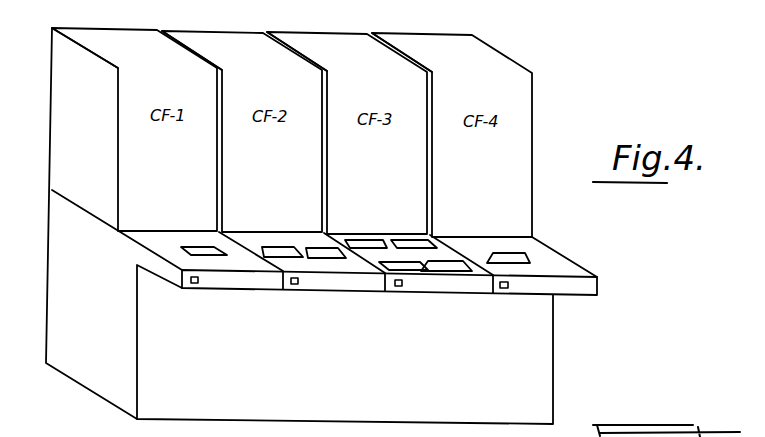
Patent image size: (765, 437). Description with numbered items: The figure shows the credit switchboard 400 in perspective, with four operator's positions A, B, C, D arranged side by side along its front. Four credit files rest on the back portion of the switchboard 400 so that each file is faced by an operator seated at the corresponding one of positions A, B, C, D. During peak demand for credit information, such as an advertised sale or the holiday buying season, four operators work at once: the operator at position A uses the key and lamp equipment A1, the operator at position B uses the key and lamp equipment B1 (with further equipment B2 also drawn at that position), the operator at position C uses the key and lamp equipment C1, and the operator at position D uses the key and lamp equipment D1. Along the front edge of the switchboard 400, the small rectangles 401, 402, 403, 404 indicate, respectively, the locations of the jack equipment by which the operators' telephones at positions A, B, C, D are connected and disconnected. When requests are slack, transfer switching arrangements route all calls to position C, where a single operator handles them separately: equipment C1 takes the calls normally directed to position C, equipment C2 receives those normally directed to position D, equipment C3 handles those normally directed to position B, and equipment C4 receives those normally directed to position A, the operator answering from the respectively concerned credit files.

The credit switchboard 400 is at (553, 349).
The jack equipment rectangle 401 is at (194, 283).
The jack equipment rectangle 402 is at (294, 284).
The jack equipment rectangle 403 is at (399, 286).
The jack equipment rectangle 404 is at (504, 288).
The operator's position A is at (243, 287).
The operator's position B is at (352, 283).
The operator's position C is at (460, 283).
The operator's position D is at (540, 289).
The key and lamp equipment A1 is at (188, 247).
The key and lamp equipment B1 is at (275, 248).
The key and lamp equipment B2 is at (312, 249).
The key and lamp equipment C1 is at (390, 270).
The key and lamp equipment C2 is at (440, 265).
The key and lamp equipment C3 is at (407, 242).
The key and lamp equipment C4 is at (367, 242).
The key and lamp equipment D1 is at (508, 253).